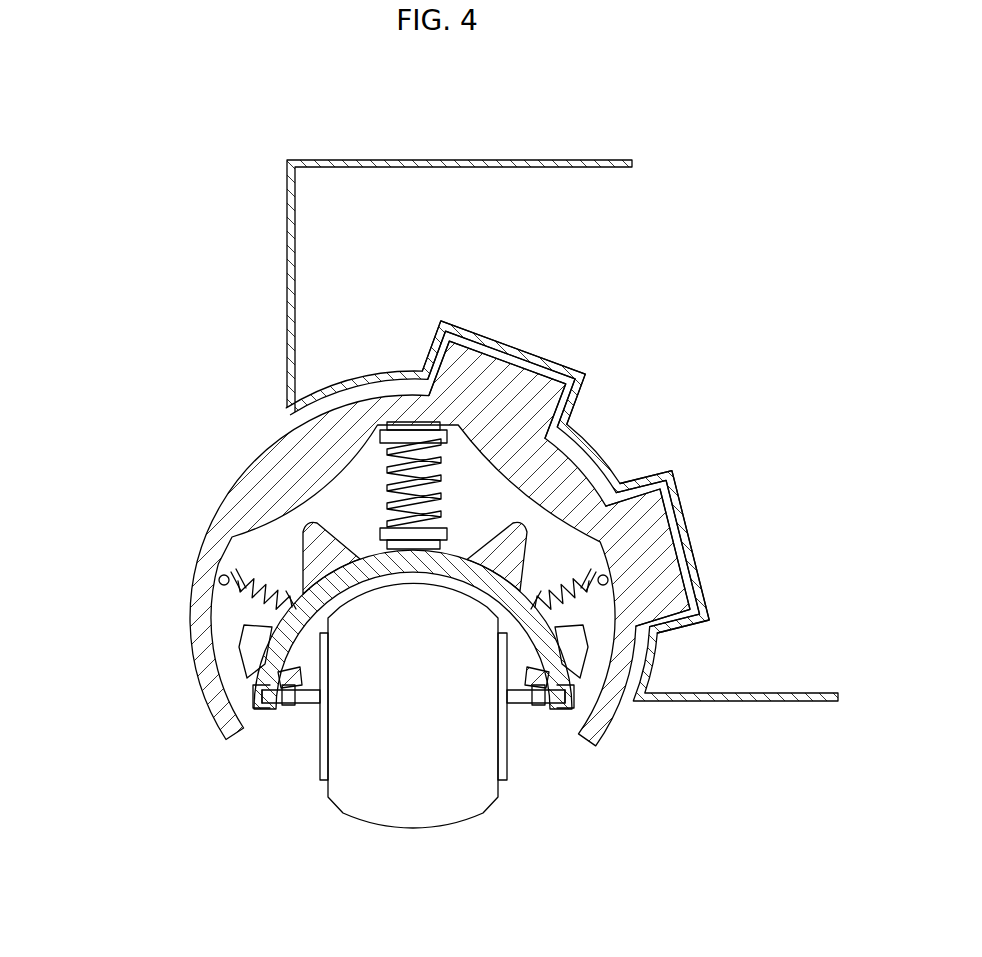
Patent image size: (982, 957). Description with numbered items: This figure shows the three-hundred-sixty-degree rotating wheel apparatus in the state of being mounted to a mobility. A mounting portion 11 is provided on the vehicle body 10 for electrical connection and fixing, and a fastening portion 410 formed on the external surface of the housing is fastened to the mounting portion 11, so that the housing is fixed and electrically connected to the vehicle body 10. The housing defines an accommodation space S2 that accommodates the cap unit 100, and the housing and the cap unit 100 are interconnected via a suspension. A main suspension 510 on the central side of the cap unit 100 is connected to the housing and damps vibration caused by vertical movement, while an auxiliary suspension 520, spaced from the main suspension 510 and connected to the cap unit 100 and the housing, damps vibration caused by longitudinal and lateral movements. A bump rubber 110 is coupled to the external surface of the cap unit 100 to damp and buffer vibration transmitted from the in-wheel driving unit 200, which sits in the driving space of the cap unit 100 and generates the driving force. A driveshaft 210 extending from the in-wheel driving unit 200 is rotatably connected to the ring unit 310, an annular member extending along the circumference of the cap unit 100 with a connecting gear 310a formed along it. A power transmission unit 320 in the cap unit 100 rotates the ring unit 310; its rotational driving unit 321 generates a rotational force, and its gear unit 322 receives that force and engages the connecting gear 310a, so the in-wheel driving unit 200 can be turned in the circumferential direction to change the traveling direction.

The vehicle body 10 is at (494, 163).
The mounting portion 11 is at (503, 345).
The cap unit 100 is at (527, 565).
The bump rubber 110 is at (315, 535).
The in-wheel driving unit 200 is at (428, 829).
The driveshaft 210 is at (311, 700).
The ring unit 310 is at (538, 700).
The connecting gear 310a is at (571, 681).
The power transmission unit 320 is at (307, 630).
The rotational driving unit 321 is at (244, 648).
The gear unit 322 is at (247, 657).
The fastening portion 410 is at (647, 505).
The main suspension 510 is at (407, 428).
The auxiliary suspension 520 is at (222, 577).
The accommodation space S2 is at (350, 492).